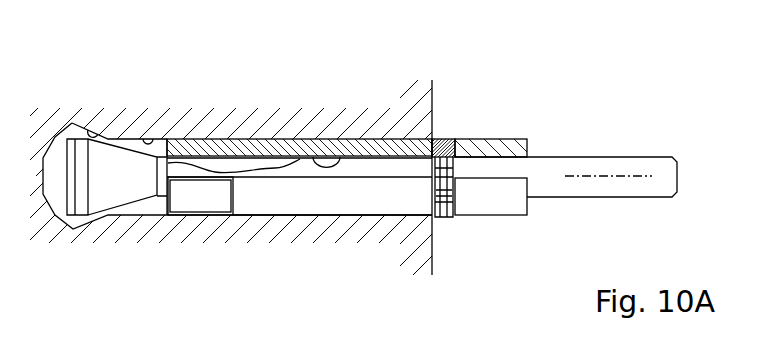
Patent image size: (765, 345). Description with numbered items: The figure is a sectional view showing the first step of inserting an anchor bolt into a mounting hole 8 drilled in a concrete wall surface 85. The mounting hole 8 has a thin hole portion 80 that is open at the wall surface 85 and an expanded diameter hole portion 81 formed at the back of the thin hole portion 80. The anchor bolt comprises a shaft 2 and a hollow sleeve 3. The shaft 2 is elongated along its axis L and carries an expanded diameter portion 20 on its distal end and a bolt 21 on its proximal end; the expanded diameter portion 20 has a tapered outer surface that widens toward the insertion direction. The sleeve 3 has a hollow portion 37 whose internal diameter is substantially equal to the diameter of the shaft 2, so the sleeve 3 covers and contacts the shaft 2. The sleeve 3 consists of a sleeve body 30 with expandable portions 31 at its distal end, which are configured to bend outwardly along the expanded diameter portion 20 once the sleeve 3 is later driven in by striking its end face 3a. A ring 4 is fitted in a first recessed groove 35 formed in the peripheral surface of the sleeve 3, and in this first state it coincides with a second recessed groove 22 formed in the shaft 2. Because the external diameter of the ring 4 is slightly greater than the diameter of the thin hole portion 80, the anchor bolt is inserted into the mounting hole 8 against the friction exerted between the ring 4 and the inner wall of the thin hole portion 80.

The shaft 2 is at (607, 81).
The hollow sleeve 3 is at (262, 288).
The end face 3a is at (527, 203).
The ring 4 is at (440, 138).
The mounting hole 8 is at (173, 48).
The expanded diameter portion 20 is at (120, 206).
The bolt 21 is at (580, 168).
The second recessed groove 22 is at (455, 168).
The sleeve body 30 is at (263, 193).
The expandable portions 31 is at (192, 197).
The first recessed groove 35 is at (449, 187).
The hollow portion 37 is at (340, 140).
The thin hole portion 80 is at (152, 120).
The expanded diameter hole portion 81 is at (105, 122).
The concrete wall surface 85 is at (433, 100).
The axis L is at (612, 176).